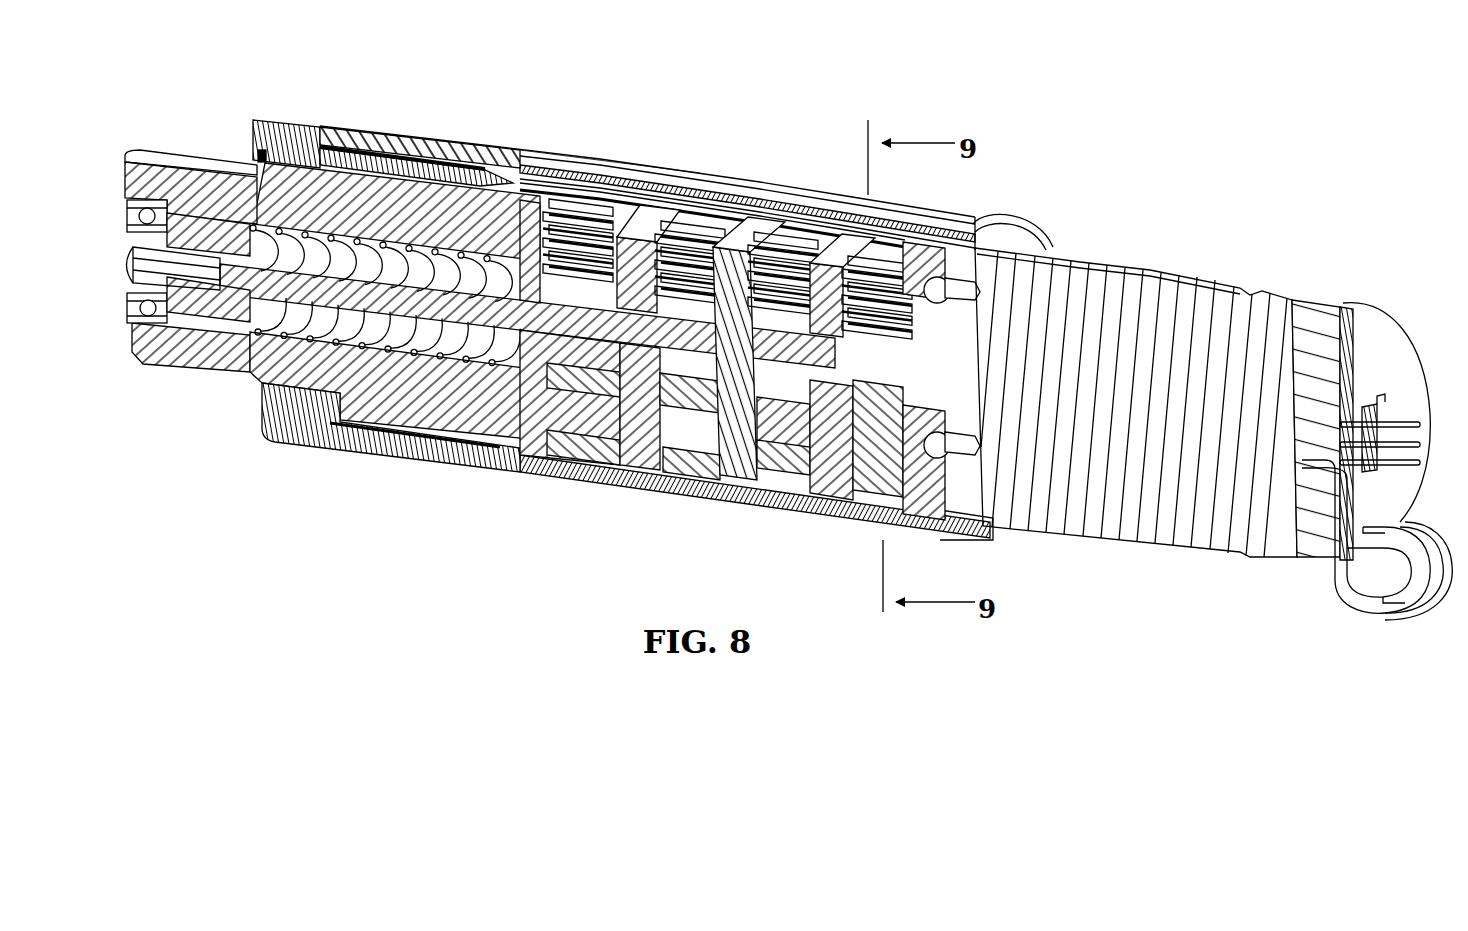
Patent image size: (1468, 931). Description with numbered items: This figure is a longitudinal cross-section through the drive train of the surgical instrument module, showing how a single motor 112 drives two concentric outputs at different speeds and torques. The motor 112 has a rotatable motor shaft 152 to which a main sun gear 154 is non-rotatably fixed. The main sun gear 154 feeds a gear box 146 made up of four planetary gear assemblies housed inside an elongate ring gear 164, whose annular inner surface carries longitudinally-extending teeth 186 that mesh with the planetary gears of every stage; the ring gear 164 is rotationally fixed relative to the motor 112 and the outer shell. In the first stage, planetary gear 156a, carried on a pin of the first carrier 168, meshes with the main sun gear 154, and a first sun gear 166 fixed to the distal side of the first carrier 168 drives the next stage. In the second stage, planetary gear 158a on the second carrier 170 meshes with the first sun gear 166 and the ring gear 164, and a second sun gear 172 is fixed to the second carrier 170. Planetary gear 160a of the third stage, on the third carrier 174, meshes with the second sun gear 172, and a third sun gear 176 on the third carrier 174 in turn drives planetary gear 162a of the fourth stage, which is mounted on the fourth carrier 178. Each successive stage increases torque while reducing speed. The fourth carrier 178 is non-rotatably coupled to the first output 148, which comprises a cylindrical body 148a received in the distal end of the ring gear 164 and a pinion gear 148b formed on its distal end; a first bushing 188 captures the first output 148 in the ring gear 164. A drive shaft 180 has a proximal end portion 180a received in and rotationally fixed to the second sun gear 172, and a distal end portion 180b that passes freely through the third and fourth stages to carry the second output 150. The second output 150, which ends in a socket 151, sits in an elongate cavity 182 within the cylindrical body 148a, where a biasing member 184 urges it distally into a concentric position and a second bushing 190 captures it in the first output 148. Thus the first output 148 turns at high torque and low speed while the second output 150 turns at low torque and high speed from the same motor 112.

The motor 112 is at (1117, 537).
The gear box 146 is at (610, 122).
The first output 148 is at (332, 315).
The cylindrical body 148a is at (378, 432).
The pinion gear 148b is at (156, 150).
The second output 150 is at (481, 319).
The socket 151 is at (135, 216).
The motor shaft 152 is at (940, 363).
The main sun gear 154 is at (902, 408).
The planetary gear 156a is at (900, 268).
The planetary gear 158a is at (800, 240).
The planetary gear 160a is at (728, 237).
The planetary gear 162a is at (600, 205).
The elongate ring gear 164 is at (561, 149).
The first sun gear 166 is at (798, 392).
The first carrier 168 is at (828, 463).
The second carrier 170 is at (740, 455).
The second sun gear 172 is at (690, 200).
The third carrier 174 is at (639, 413).
The third sun gear 176 is at (528, 420).
The fourth carrier 178 is at (528, 426).
The drive shaft 180 is at (462, 272).
The proximal end portion 180a is at (718, 345).
The distal end portion 180b is at (262, 150).
The elongate cavity 182 is at (385, 363).
The biasing member 184 is at (331, 233).
The longitudinally-extending teeth 186 is at (415, 142).
The first bushing 188 is at (284, 120).
The second bushing 190 is at (135, 308).